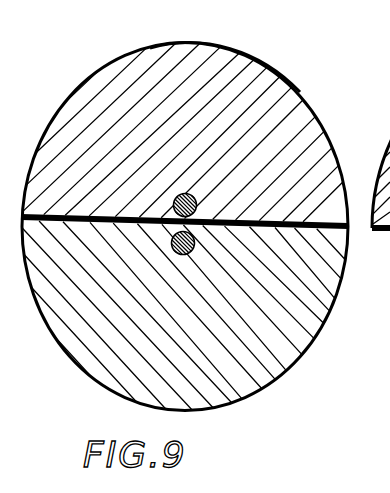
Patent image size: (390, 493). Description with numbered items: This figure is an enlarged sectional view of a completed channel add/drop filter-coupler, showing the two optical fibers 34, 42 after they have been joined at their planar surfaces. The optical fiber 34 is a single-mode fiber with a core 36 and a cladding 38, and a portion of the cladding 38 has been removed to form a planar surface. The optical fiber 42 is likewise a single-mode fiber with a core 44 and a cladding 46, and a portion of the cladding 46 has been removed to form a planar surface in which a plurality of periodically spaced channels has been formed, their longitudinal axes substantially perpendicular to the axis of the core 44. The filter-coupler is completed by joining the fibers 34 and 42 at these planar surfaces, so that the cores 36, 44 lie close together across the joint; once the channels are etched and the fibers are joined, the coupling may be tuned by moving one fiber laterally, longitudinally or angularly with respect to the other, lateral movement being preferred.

The optical fiber 34 is at (250, 398).
The optical fiber 42 is at (258, 58).
The cladding 46 is at (282, 88).
The cladding 38 is at (282, 369).
The core 44 is at (194, 196).
The core 36 is at (192, 251).